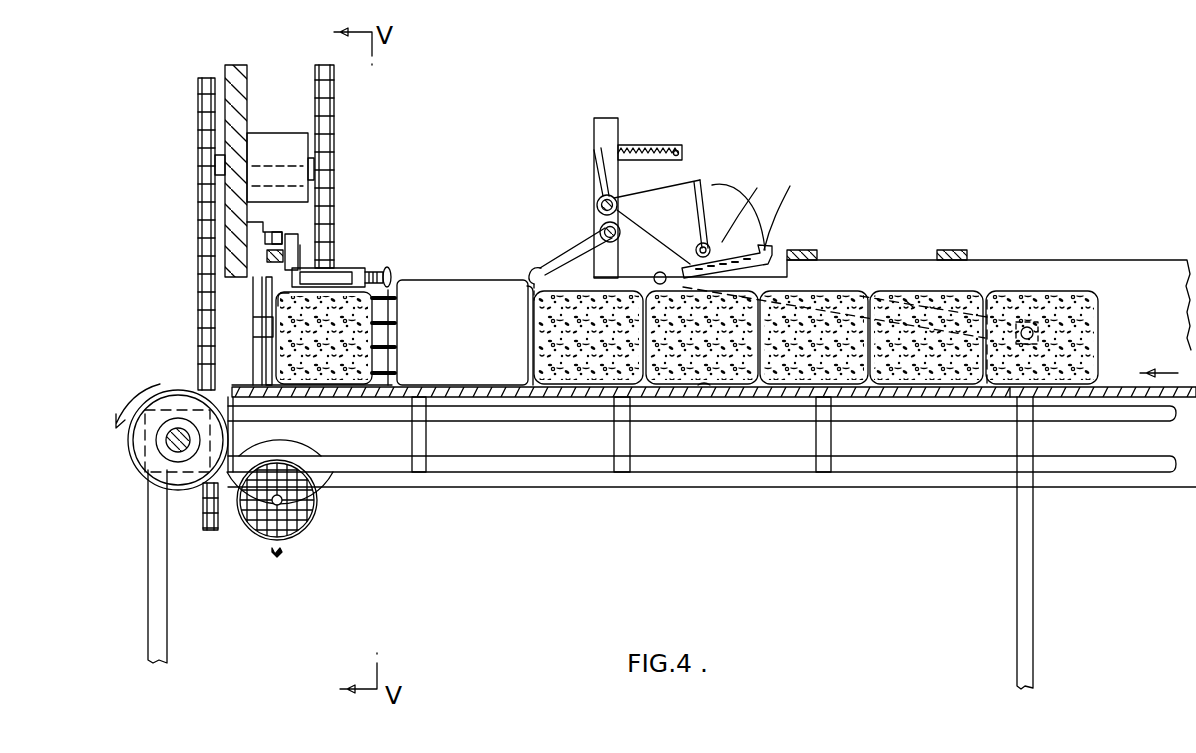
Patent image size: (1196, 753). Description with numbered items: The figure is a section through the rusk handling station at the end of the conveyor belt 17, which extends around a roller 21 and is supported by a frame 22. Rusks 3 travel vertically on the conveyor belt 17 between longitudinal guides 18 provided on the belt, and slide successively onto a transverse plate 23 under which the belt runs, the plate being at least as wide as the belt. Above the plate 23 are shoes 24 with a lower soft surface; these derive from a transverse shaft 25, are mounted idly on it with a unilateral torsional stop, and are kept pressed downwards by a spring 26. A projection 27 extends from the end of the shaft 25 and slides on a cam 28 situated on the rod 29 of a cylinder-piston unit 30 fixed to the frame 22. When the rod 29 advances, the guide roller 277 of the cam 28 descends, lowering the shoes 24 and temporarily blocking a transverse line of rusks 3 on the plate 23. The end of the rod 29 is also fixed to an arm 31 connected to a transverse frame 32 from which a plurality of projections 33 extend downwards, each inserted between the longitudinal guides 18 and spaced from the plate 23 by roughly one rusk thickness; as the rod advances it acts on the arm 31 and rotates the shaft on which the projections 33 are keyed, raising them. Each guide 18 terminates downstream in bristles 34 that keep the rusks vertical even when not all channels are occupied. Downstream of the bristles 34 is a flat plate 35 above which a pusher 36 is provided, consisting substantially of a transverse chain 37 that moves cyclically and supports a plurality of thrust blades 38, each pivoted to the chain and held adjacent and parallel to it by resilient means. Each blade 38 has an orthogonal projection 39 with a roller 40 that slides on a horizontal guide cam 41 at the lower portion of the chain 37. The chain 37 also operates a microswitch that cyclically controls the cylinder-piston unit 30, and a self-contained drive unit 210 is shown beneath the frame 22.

The rusk 3 is at (1028, 292).
The conveyor belt 17 is at (135, 440).
The longitudinal guide 18 is at (867, 268).
The roller 21 is at (144, 474).
The frame 22 is at (772, 470).
The transverse plate 23 is at (711, 388).
The shoe 24 is at (753, 224).
The transverse shaft 25 is at (601, 202).
The spring 26 is at (638, 147).
The projection 27 is at (702, 212).
The cam 28 is at (697, 188).
The rod 29 is at (752, 300).
The cylinder-piston unit 30 is at (905, 300).
The arm 31 is at (628, 262).
The transverse frame 32 is at (538, 264).
The projection 33 is at (527, 330).
The bristles 34 is at (398, 270).
The flat plate 35 is at (262, 380).
The pusher 36 is at (286, 80).
The transverse chain 37 is at (338, 136).
The thrust blade 38 is at (272, 307).
The orthogonal projection 39 is at (296, 252).
The roller 40 is at (253, 233).
The horizontal guide cam 41 is at (267, 258).
The motor 210 is at (318, 536).
The guide roller 277 is at (750, 204).